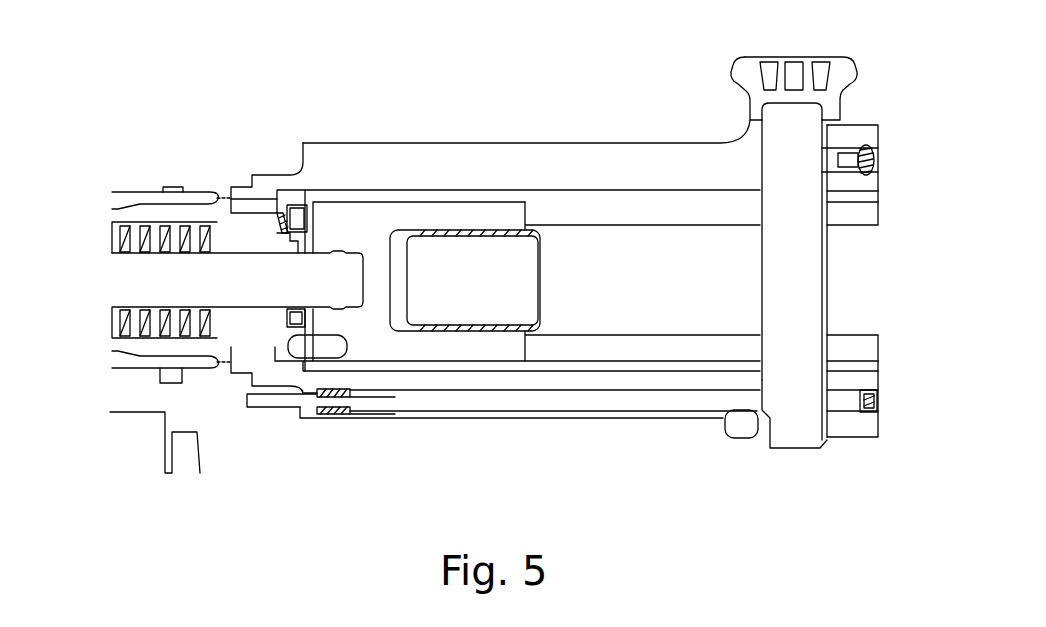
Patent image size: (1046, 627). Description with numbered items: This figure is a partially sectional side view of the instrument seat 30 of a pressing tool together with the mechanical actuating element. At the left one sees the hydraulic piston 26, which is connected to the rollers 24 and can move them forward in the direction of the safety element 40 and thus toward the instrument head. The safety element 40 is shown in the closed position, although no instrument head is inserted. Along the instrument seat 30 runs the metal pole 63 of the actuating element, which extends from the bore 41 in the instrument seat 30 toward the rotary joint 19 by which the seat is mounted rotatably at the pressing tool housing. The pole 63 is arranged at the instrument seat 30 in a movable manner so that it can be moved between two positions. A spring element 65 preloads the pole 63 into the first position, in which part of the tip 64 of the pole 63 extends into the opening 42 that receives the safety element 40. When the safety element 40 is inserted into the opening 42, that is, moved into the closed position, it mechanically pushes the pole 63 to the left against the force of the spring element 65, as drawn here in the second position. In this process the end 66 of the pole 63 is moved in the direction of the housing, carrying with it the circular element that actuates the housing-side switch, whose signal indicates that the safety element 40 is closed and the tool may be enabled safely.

The rotary joint 19 is at (218, 360).
The rollers 24 is at (462, 264).
The hydraulic piston 26 is at (225, 277).
The instrument seat 30 is at (374, 136).
The safety element 40 is at (849, 97).
The bore 41 is at (760, 380).
The opening 42 is at (733, 139).
The pole 63 is at (563, 400).
The tip 64 is at (762, 405).
The spring element 65 is at (355, 418).
The end 66 is at (248, 403).